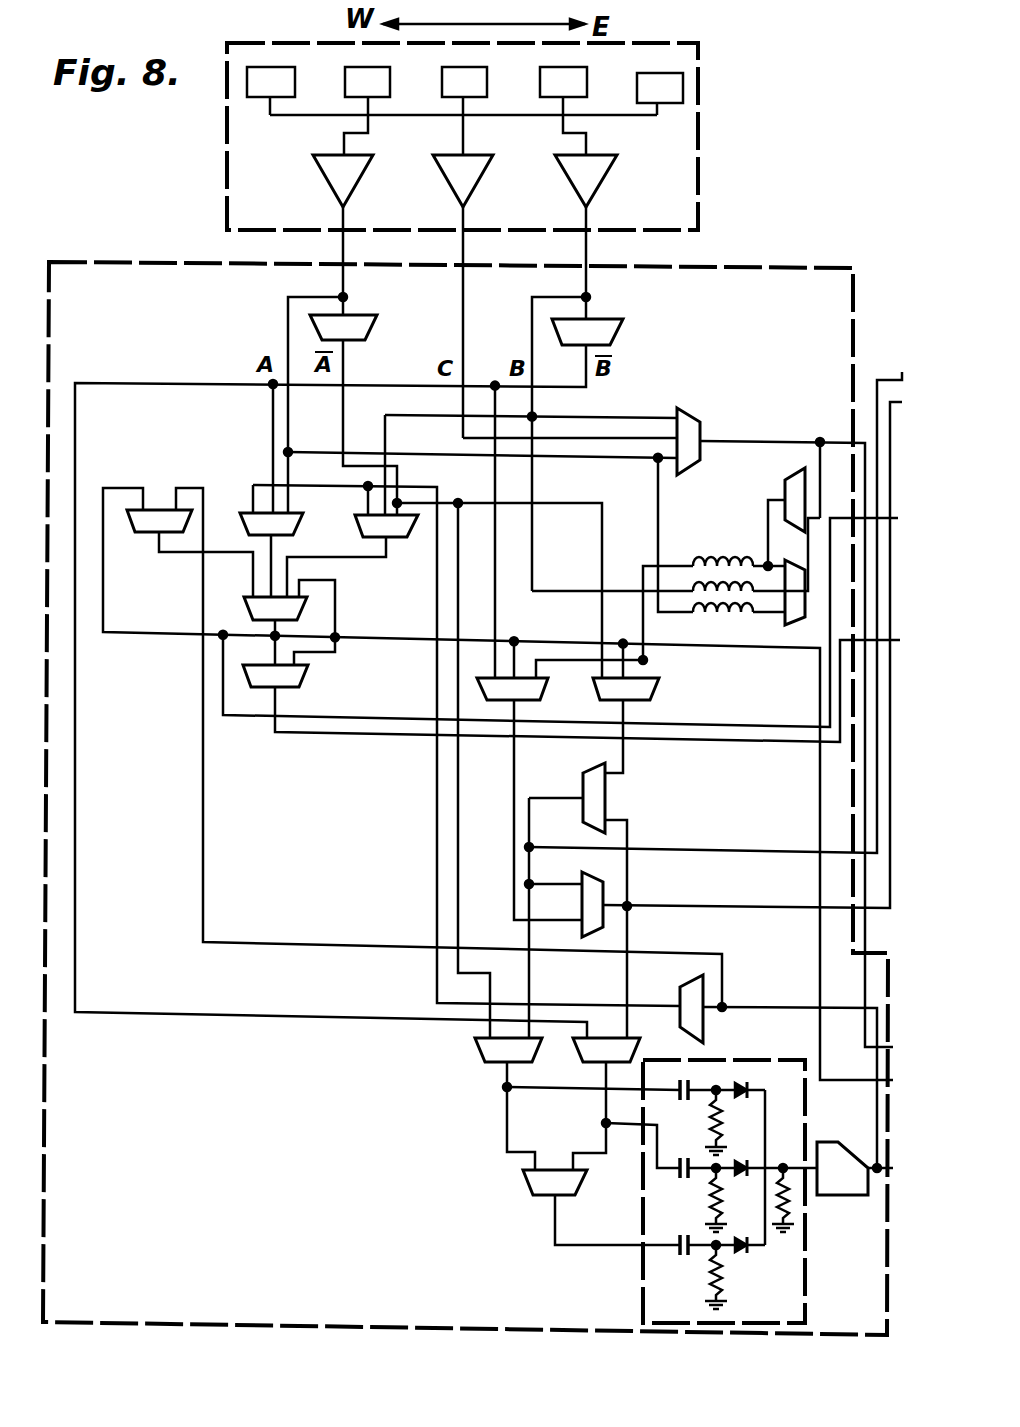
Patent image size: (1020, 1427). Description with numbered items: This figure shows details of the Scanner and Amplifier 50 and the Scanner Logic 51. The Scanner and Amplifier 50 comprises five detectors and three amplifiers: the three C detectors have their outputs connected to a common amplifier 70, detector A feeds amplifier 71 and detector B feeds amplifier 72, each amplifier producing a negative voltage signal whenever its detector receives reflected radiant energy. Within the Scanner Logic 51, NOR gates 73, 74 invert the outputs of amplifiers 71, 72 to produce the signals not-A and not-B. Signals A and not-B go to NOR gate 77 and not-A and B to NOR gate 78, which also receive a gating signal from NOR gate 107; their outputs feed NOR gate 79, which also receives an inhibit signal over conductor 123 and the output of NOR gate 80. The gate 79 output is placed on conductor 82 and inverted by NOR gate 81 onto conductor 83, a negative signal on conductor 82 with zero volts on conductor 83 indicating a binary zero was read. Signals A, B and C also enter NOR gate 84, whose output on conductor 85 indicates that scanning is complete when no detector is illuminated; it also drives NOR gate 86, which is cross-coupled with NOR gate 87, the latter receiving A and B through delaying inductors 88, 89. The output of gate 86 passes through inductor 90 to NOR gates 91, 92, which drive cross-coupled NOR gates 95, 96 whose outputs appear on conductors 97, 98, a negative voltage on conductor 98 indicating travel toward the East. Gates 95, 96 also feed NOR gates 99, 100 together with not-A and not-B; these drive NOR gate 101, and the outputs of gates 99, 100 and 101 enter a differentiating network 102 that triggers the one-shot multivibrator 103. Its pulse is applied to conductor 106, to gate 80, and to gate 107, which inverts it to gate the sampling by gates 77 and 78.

The Scanner and Amplifier 50 is at (698, 104).
The Scanner Logic 51 is at (788, 262).
The amplifier 70 is at (486, 158).
The amplifier 71 is at (366, 158).
The amplifier 72 is at (610, 158).
The NOR gate 73 is at (368, 313).
The NOR gate 74 is at (615, 317).
The NOR gate 77 is at (252, 520).
The NOR gate 78 is at (358, 523).
The NOR gate 79 is at (256, 606).
The NOR gate 80 is at (142, 520).
The NOR gate 81 is at (292, 675).
The conductor 82 is at (240, 717).
The conductor 83 is at (326, 734).
The NOR gate 84 is at (690, 408).
The conductor 85 is at (746, 441).
The NOR gate 86 is at (794, 476).
The NOR gate 87 is at (809, 562).
The inductor 88 is at (698, 618).
The inductor 89 is at (690, 578).
The inductor 90 is at (742, 564).
The NOR gate 91 is at (643, 688).
The NOR gate 92 is at (530, 688).
The NOR gate 95 is at (606, 792).
The NOR gate 96 is at (595, 882).
The conductor 97 is at (714, 850).
The conductor 98 is at (696, 908).
The NOR gate 99 is at (484, 1048).
The NOR gate 100 is at (600, 1046).
The NOR gate 101 is at (534, 1181).
The differentiating network 102 is at (794, 1044).
The one-shot multivibrator 103 is at (842, 1168).
The conductor 106 is at (876, 1172).
The NOR gate 107 is at (684, 984).
The conductor 123 is at (862, 1080).